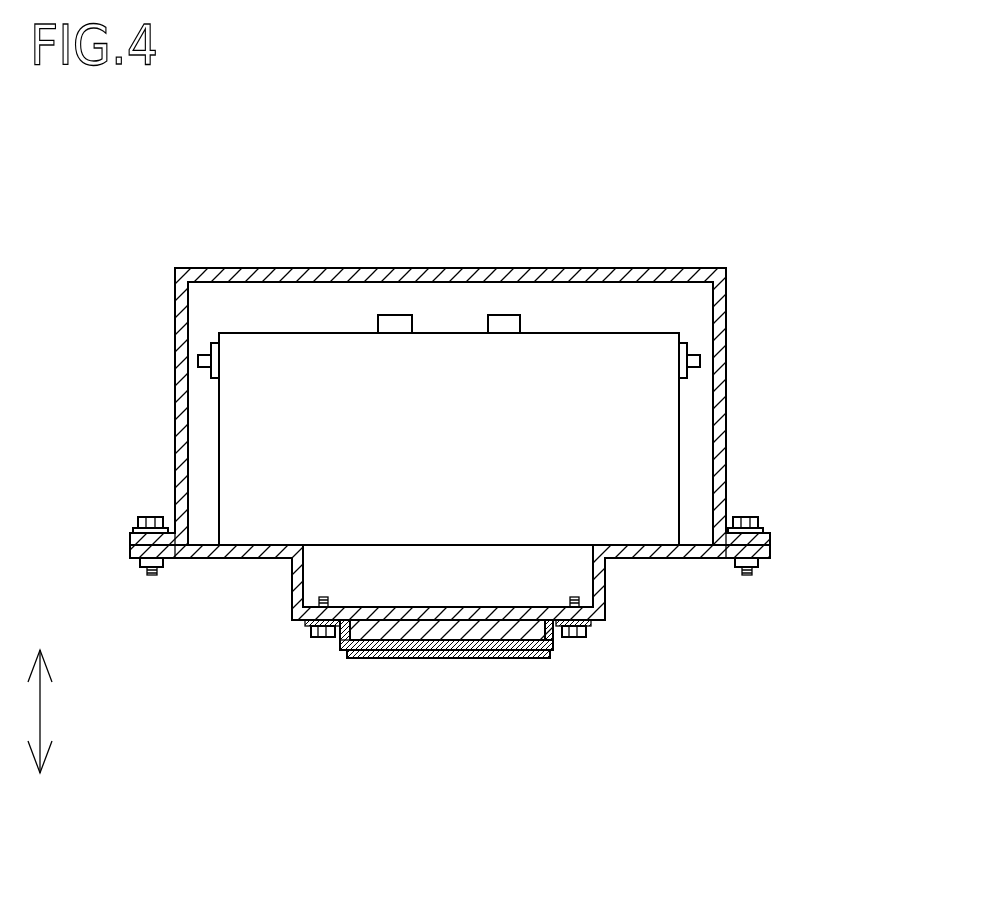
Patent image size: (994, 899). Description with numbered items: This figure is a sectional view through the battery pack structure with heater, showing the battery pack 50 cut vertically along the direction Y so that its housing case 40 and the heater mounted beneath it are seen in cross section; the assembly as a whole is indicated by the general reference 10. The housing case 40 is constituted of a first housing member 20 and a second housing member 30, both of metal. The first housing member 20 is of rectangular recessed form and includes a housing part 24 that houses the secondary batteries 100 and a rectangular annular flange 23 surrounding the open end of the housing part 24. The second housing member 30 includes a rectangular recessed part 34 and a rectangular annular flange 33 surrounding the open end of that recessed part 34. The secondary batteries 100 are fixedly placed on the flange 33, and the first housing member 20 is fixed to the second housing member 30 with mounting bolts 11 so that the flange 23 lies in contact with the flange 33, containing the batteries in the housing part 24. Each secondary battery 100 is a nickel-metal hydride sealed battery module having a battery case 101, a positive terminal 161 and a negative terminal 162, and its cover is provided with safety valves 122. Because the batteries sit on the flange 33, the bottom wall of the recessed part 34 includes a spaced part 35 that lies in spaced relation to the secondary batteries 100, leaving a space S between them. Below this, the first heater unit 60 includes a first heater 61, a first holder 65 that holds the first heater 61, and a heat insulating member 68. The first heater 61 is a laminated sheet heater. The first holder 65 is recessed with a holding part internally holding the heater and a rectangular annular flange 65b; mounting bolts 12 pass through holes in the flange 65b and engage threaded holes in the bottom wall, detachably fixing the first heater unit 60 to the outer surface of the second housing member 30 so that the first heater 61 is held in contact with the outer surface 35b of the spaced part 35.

The power conversion device 10 is at (582, 230).
The mounting bolt 11 is at (150, 516).
The mounting bolt 12 is at (323, 637).
The first housing member 20 is at (453, 406).
The flange 23 is at (133, 537).
The housing part 24 is at (181, 320).
The second housing member 30 is at (445, 597).
The flange 33 is at (140, 556).
The recessed part 34 is at (297, 607).
The spaced part 35 is at (454, 710).
The outer surface 35b is at (470, 658).
The housing case 40 is at (453, 459).
The battery pack 50 is at (730, 291).
The first heater unit 60 is at (483, 695).
The first heater 61 is at (410, 645).
The first holder 65 is at (483, 691).
The flange 65b is at (338, 645).
The heat insulating member 68 is at (520, 658).
The secondary battery 100 is at (383, 380).
The battery case 101 is at (219, 400).
The safety valve 122 is at (378, 325).
The positive terminal 161 is at (198, 359).
The negative terminal 162 is at (700, 358).
The space S is at (345, 572).
The vertical direction Y is at (41, 712).